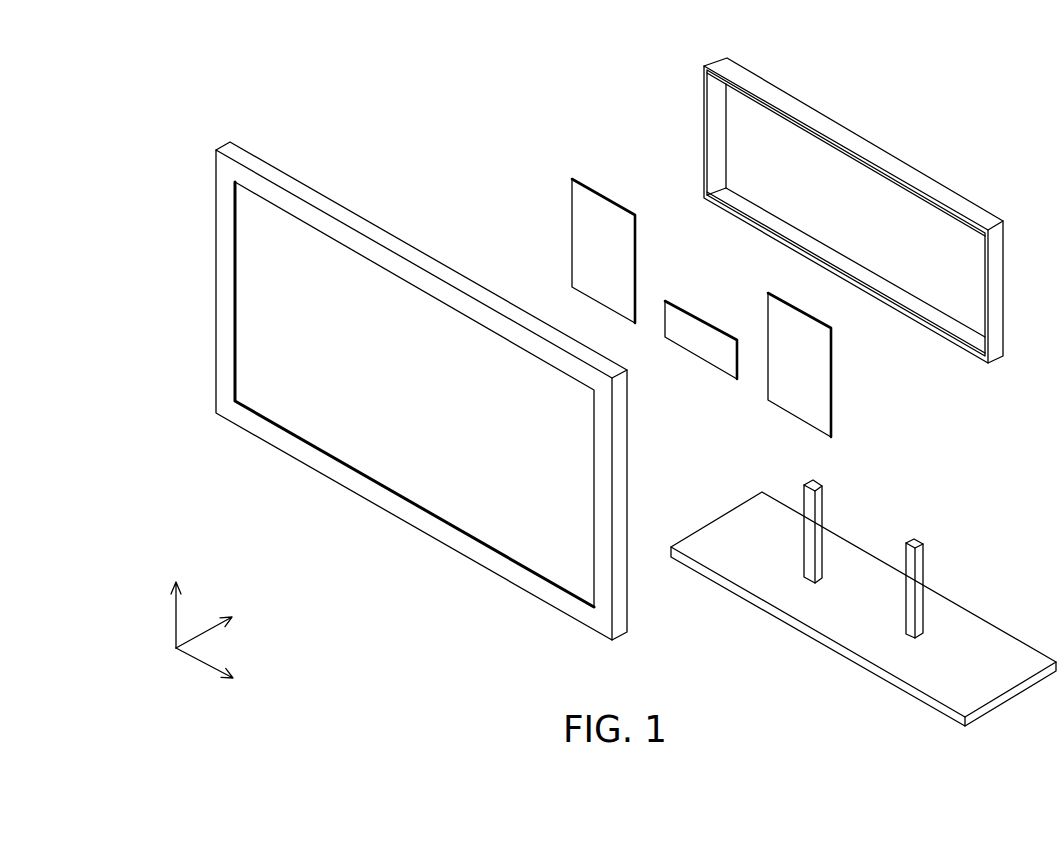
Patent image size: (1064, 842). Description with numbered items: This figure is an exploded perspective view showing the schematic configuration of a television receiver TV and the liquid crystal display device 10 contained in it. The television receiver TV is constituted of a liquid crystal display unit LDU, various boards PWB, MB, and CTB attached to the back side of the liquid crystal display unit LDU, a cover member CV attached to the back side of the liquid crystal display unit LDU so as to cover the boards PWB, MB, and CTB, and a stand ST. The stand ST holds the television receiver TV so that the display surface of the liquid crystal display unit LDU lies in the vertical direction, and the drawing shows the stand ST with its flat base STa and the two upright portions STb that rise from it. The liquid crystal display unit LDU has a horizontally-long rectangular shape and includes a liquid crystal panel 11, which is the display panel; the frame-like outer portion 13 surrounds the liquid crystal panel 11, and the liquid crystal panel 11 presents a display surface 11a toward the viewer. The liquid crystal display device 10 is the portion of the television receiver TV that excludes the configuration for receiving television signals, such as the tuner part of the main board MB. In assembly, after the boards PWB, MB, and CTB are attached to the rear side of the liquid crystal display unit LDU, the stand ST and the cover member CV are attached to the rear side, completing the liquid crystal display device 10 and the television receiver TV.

The television receiver TV is at (305, 66).
The liquid crystal display device 10 is at (437, 135).
The liquid crystal display unit LDU is at (216, 252).
The bezel 13 is at (228, 172).
The liquid crystal panel 11 is at (390, 468).
The display surface 11a is at (320, 420).
The main board MB is at (601, 195).
The control board CTB is at (702, 322).
The power board PWB is at (832, 372).
The cover member CV is at (853, 130).
The stand ST is at (757, 603).
The stand base STa is at (845, 622).
The stand support STb is at (907, 557).